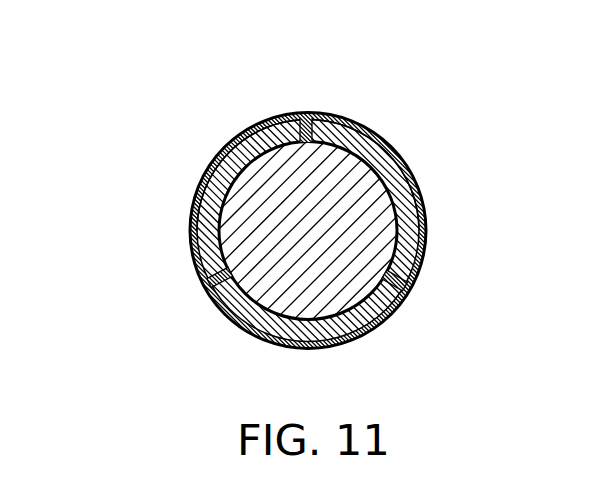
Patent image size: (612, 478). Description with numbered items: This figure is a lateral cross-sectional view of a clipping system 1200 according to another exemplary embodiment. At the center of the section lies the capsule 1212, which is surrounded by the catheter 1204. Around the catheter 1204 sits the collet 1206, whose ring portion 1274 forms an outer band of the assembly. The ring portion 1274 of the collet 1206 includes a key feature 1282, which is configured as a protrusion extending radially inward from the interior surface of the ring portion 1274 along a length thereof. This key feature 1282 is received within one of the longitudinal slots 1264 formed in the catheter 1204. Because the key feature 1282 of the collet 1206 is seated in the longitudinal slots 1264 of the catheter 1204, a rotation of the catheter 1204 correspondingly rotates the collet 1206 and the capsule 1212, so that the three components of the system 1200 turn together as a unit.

The system 1200 is at (295, 221).
The catheter 1204 is at (397, 192).
The collet 1206 is at (377, 122).
The capsule 1212 is at (353, 260).
The longitudinal slots 1264 is at (214, 278).
The ring portion 1274 is at (229, 147).
The key feature 1282 is at (312, 114).